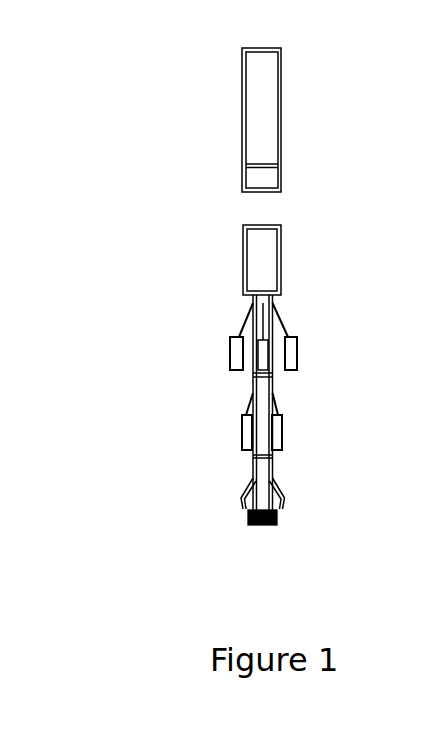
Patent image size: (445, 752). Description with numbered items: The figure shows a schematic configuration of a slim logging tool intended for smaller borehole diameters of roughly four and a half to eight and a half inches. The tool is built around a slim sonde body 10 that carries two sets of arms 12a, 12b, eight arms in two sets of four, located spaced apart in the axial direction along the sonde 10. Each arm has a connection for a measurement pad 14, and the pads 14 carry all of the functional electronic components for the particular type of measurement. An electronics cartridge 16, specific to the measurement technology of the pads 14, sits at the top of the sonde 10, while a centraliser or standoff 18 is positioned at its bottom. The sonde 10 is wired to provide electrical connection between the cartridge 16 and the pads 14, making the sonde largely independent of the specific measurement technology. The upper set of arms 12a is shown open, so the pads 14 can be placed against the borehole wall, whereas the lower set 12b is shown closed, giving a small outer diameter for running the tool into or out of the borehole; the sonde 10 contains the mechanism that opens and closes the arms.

The slim sonde body 10 is at (242, 280).
The first set of arms 12a is at (228, 327).
The second set of arms 12b is at (240, 407).
The measurement pad 14 is at (300, 348).
The electronics cartridge 16 is at (225, 117).
The centraliser or standoff 18 is at (287, 477).